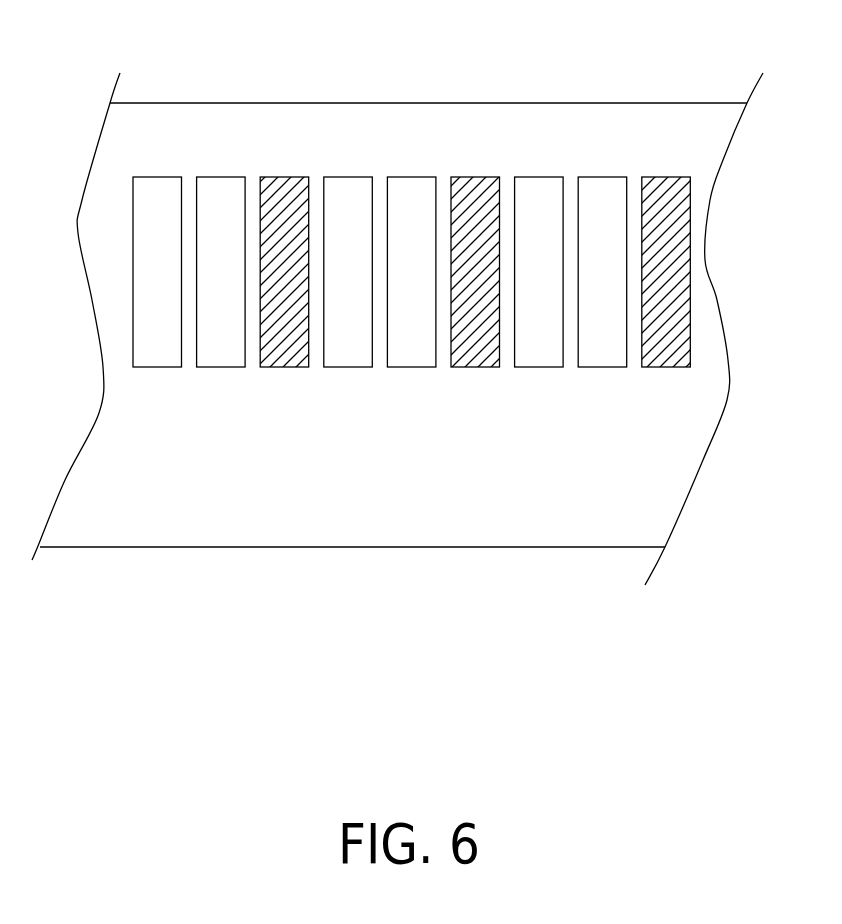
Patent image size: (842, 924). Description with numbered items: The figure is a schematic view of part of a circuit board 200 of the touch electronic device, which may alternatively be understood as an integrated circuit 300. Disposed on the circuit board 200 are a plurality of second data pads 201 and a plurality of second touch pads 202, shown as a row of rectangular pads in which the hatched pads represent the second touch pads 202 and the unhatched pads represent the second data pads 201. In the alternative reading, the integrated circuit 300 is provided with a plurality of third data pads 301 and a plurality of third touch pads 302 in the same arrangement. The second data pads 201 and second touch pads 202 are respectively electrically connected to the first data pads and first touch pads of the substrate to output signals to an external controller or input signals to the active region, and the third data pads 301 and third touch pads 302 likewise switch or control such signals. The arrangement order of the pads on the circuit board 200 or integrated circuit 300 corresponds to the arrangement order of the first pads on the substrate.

The circuit board 200 is at (560, 528).
The integrated circuit 300 is at (558, 655).
The second data pad 201 is at (220, 190).
The third data pad 301 is at (211, 196).
The second touch pad 202 is at (283, 188).
The third touch pad 302 is at (286, 196).